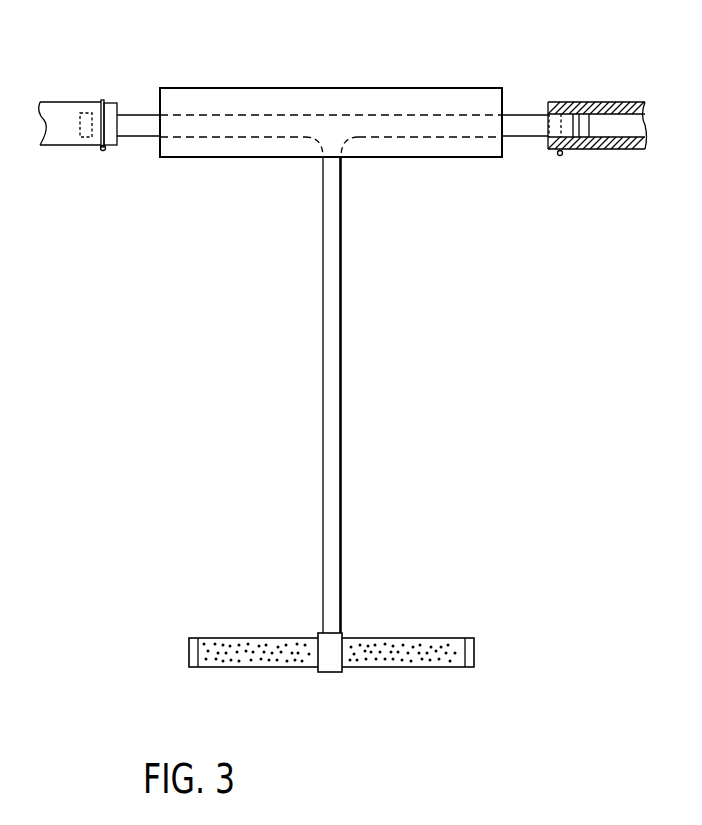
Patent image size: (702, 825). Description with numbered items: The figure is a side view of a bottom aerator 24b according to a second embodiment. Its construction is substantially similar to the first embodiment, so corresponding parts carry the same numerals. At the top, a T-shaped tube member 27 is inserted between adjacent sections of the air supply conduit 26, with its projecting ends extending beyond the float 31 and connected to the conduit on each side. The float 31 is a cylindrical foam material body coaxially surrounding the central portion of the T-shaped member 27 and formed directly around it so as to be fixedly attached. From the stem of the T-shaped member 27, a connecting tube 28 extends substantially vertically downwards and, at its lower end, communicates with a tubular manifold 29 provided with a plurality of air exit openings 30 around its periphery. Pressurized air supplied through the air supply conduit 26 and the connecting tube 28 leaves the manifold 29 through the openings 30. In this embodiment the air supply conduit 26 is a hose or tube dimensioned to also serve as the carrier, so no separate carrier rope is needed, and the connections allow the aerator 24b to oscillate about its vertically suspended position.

The bottom aerator 24b is at (302, 268).
The air supply conduit 26 is at (58, 118).
The T-shaped tube member 27 is at (335, 133).
The connecting tube 28 is at (330, 343).
The tubular manifold 29 is at (331, 610).
The air exit openings 30 is at (416, 657).
The float 31 is at (434, 105).